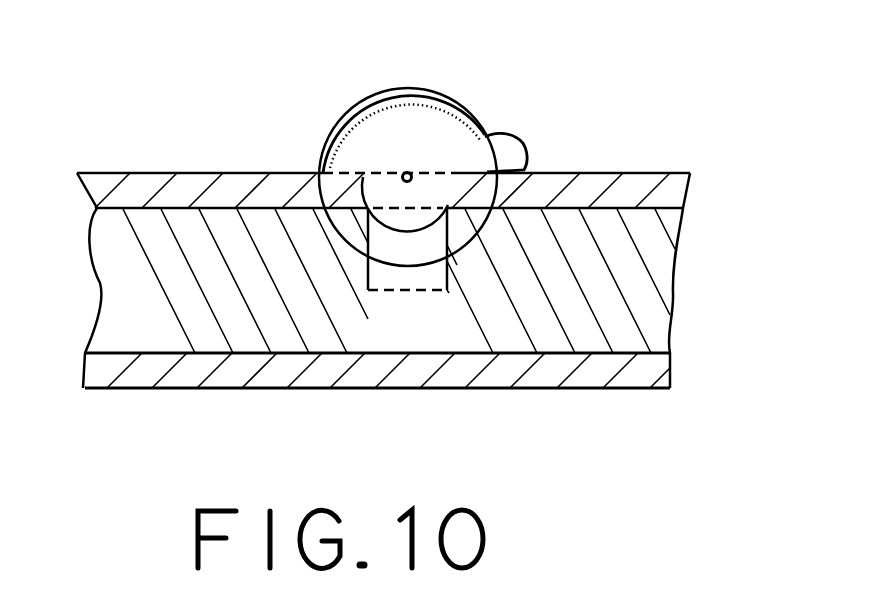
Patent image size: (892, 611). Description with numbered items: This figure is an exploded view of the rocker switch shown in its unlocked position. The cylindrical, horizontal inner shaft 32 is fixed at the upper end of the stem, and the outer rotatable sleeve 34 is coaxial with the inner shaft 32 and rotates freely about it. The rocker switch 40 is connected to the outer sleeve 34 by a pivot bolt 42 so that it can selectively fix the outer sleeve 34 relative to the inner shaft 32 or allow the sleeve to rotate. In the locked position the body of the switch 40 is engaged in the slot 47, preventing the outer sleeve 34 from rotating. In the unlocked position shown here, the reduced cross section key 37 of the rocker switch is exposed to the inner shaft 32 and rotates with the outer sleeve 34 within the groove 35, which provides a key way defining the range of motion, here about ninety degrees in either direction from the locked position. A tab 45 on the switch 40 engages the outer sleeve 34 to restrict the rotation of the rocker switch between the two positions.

The inner shaft portion 32 is at (173, 217).
The outer rotatable sleeve 34 is at (633, 185).
The groove 35 is at (368, 290).
The key 37 is at (423, 220).
The rocker switch 40 is at (418, 90).
The pivot bolt 42 is at (405, 175).
The tab 45 is at (513, 137).
The slot 47 is at (353, 237).